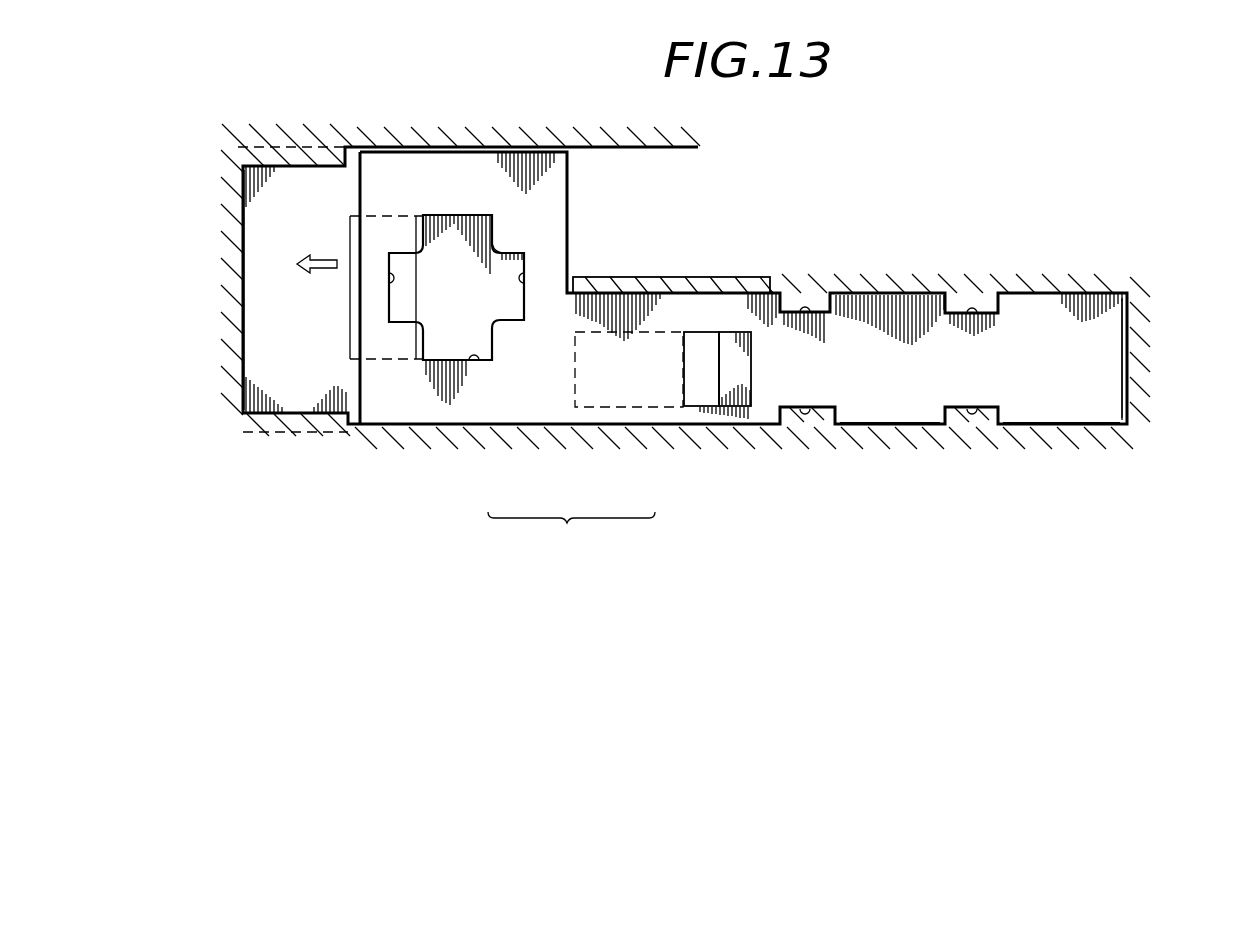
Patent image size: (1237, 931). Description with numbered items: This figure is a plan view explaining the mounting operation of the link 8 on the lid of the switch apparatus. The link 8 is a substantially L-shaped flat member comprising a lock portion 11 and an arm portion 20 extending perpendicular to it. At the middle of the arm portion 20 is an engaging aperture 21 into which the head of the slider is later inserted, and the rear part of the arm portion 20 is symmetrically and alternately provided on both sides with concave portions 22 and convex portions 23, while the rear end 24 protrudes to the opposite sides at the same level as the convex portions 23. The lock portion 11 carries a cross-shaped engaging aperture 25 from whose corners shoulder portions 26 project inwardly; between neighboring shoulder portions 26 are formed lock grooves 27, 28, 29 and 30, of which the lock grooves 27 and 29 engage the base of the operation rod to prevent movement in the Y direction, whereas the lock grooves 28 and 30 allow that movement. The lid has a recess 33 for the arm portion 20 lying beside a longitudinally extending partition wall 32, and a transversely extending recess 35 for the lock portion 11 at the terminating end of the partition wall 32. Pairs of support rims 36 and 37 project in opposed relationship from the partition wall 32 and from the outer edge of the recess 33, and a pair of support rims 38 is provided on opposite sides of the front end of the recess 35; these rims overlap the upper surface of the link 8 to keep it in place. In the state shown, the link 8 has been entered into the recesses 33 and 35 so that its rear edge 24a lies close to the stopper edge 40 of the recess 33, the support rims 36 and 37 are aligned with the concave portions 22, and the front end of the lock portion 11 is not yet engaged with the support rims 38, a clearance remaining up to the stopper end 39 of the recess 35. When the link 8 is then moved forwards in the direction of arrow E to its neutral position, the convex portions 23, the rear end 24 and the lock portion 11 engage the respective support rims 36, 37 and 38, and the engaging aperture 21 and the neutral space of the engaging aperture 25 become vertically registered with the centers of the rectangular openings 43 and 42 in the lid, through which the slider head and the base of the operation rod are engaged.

The link 8 is at (571, 543).
The lock portion 11 is at (508, 427).
The arm portion 20 is at (650, 407).
The engaging aperture 21 is at (733, 393).
The concave portions 22 is at (988, 418).
The convex portions 23 is at (903, 413).
The rear end 24 is at (1068, 413).
The rear edge 24a is at (1098, 380).
The engaging aperture 25 is at (480, 302).
The shoulder portions 26 is at (500, 245).
The lock groove 27 is at (387, 272).
The lock groove 28 is at (480, 358).
The lock groove 29 is at (530, 272).
The lock groove 30 is at (458, 214).
The partition wall 32 is at (693, 283).
The recess 33 is at (1130, 405).
The recess 35 is at (323, 332).
The support rims 36 is at (982, 302).
The support rims 37 is at (975, 427).
The support rims 38 is at (290, 422).
The stopper end 39 is at (243, 286).
The stopper edge 40 is at (1128, 330).
The rectangular opening 42 is at (405, 313).
The rectangular opening 43 is at (697, 393).